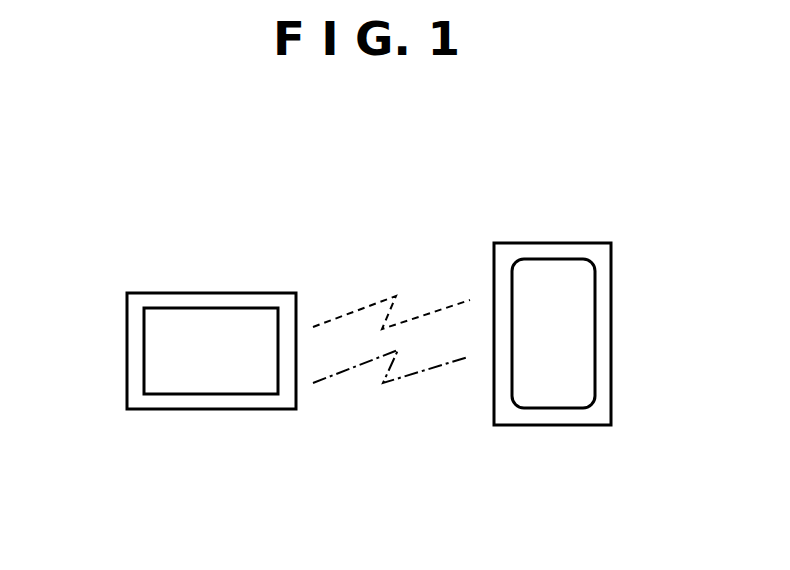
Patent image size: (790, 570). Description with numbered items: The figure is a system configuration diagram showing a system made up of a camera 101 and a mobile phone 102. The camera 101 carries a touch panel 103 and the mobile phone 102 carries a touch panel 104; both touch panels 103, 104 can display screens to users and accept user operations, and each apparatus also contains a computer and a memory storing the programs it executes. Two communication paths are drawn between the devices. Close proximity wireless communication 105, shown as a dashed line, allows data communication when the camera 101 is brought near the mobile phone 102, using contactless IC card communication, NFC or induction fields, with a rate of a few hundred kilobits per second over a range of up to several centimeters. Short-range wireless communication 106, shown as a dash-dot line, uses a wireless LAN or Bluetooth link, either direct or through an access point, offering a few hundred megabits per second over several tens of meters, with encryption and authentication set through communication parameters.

The camera 101 is at (155, 293).
The mobile phone 102 is at (611, 268).
The touch panel 103 is at (145, 376).
The touch panel 104 is at (587, 383).
The close proximity wireless communication 105 is at (392, 293).
The short-range wireless communication 106 is at (407, 380).